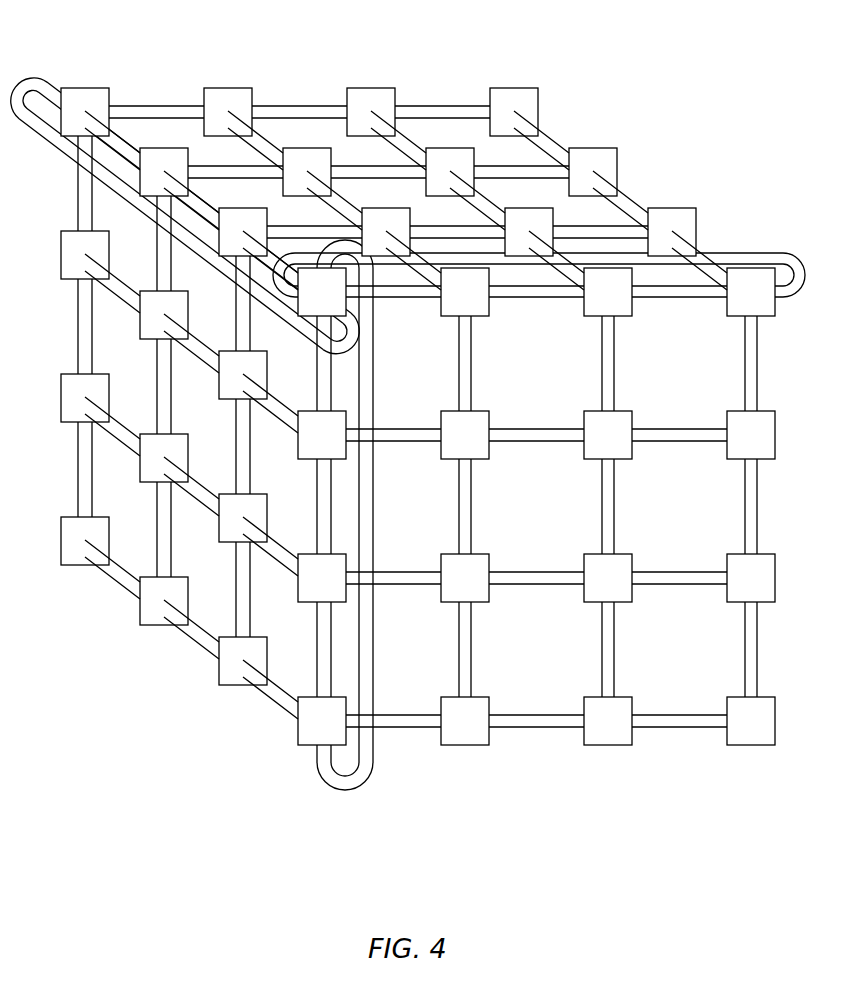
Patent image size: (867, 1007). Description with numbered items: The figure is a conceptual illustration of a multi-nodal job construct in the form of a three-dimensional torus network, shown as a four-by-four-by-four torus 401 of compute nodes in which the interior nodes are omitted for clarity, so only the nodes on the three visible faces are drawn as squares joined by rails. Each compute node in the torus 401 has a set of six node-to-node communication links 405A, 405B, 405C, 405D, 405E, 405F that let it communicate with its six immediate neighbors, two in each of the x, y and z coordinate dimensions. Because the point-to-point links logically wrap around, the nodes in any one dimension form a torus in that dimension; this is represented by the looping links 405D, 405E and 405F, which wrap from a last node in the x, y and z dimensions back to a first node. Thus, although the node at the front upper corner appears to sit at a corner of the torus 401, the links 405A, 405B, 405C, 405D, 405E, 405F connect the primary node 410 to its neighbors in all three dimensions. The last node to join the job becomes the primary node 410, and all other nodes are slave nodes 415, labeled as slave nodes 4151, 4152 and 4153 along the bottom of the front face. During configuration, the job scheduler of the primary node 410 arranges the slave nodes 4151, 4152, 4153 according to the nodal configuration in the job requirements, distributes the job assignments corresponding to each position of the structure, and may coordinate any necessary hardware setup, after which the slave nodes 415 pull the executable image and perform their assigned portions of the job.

The torus 401 is at (668, 98).
The node-to-node communication link 405A is at (403, 298).
The node-to-node communication link 405B is at (331, 372).
The node-to-node communication link 405C is at (287, 251).
The node-to-node communication link 405D is at (753, 252).
The node-to-node communication link 405E is at (346, 791).
The node-to-node communication link 405F is at (36, 80).
The primary node 410 is at (305, 322).
The slave nodes 415 is at (622, 541).
The slave node 4151 is at (465, 743).
The slave node 4152 is at (607, 743).
The slave node 4153 is at (752, 743).